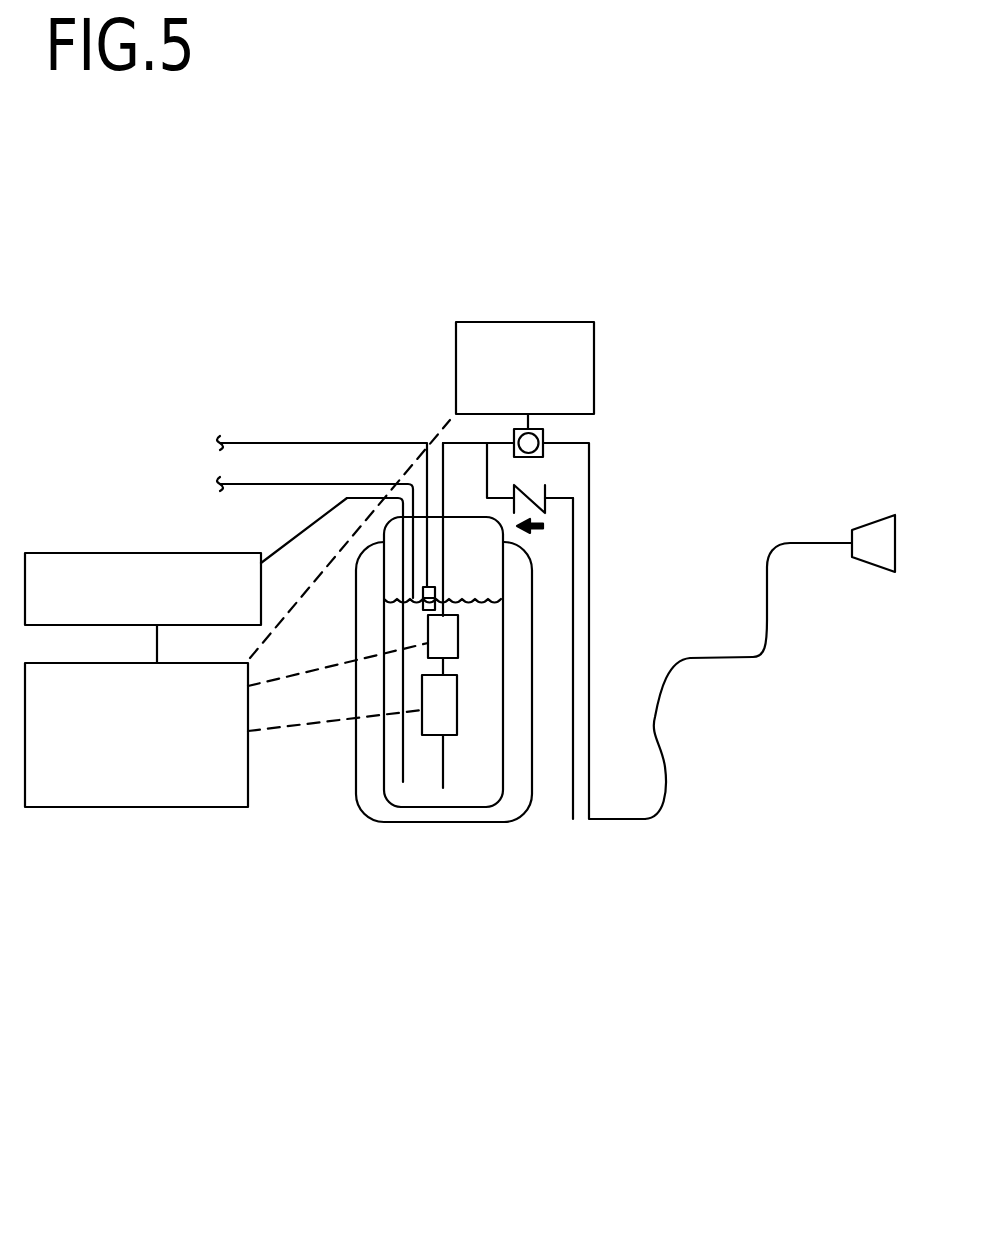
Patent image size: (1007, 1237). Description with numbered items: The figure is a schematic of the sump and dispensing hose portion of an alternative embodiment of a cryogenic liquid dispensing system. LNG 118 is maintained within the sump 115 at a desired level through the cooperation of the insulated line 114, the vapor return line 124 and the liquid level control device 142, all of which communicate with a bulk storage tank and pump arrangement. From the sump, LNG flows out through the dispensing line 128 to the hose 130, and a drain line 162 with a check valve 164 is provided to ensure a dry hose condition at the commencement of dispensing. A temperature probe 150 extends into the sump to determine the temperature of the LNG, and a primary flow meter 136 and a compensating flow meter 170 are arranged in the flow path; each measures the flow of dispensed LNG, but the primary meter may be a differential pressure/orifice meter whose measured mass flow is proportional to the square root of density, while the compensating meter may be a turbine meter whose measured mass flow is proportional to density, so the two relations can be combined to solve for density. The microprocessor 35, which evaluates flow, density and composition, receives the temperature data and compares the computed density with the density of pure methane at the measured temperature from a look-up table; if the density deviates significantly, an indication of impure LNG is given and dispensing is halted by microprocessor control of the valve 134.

The microprocessor 35 is at (70, 807).
The insulated line 114 is at (317, 487).
The sump 115 is at (360, 807).
The LNG 118 is at (465, 767).
The vapor return line 124 is at (367, 443).
The dispensing line 128 is at (588, 802).
The hose 130 is at (665, 752).
The valve 134 is at (543, 436).
The primary flow meter 136 is at (428, 633).
The liquid level control device 142 is at (437, 593).
The temperature probe 150 is at (403, 742).
The drain line 162 is at (573, 763).
The check valve 164 is at (545, 492).
The compensating flow meter 170 is at (431, 740).